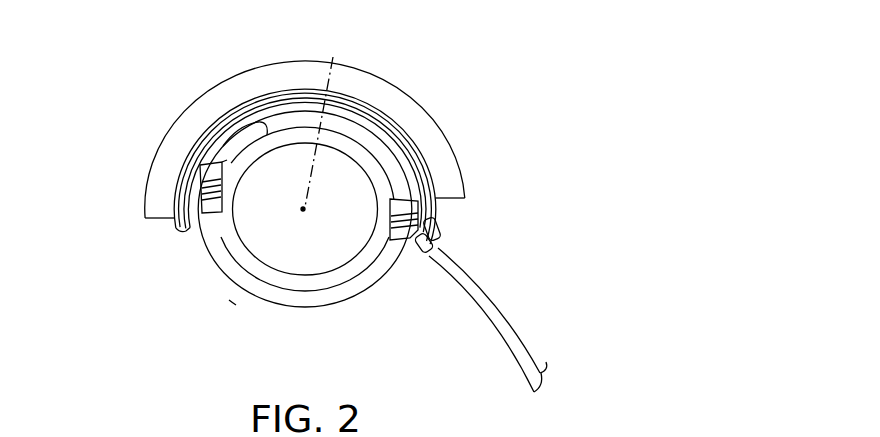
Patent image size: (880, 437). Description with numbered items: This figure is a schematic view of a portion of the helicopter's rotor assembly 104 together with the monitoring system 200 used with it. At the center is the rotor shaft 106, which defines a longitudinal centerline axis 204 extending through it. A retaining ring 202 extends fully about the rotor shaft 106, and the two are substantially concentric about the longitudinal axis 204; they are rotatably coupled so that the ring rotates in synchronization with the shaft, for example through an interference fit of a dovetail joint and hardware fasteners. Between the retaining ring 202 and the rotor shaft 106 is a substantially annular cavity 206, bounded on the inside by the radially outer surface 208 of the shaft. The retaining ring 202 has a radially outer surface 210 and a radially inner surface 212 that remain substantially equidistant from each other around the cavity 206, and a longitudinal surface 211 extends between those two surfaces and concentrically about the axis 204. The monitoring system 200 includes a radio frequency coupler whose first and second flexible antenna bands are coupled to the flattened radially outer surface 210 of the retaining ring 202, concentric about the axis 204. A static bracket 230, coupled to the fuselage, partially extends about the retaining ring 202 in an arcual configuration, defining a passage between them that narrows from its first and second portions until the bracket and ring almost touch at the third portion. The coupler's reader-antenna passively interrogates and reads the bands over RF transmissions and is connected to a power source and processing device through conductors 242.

The rotor assembly 104 is at (387, 62).
The rotor shaft 106 is at (341, 275).
The monitoring system 200 is at (417, 268).
The retaining ring 202 is at (215, 267).
The longitudinal centerline axis 204 is at (328, 124).
The annular cavity 206 is at (273, 300).
The radially outer surface of rotor shaft 208 is at (307, 292).
The radially outer surface of retaining ring 210 is at (210, 292).
The longitudinal surface 211 is at (235, 297).
The radially inner surface of retaining ring 212 is at (222, 138).
The static bracket 230 is at (247, 84).
The conductors 242 is at (479, 327).